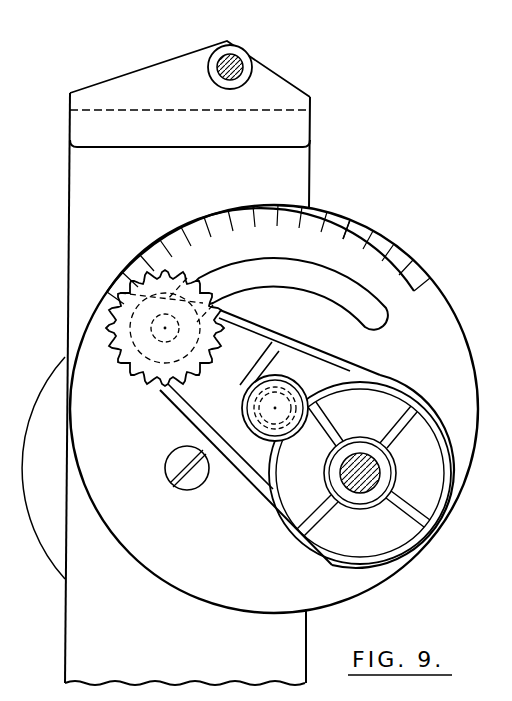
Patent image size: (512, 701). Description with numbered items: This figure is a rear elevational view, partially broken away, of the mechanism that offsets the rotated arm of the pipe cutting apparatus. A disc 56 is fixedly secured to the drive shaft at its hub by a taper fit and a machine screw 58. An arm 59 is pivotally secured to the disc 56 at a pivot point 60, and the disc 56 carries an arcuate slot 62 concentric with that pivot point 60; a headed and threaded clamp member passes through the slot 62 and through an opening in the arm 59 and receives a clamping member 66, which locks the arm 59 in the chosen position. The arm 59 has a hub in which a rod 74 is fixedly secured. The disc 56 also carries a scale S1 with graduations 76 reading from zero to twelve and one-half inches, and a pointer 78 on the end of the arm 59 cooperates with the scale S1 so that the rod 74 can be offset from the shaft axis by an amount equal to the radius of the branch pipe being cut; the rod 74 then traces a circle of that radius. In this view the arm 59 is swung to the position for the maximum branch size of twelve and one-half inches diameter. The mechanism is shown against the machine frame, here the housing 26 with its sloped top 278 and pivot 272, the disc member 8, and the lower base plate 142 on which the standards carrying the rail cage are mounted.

The housing body 26 is at (72, 200).
The cage base plate 142 is at (153, 670).
The sloped top of housing 278 is at (147, 68).
The pivot pin 272 is at (242, 53).
The disc member 8 is at (38, 452).
The disc 56 is at (438, 312).
The arcuate slot 62 is at (340, 277).
The arm 59 is at (367, 374).
The rod 74 is at (372, 470).
The pivot point 60 is at (279, 402).
The machine screw 58 is at (190, 489).
The clamping member 66 is at (160, 392).
The pointer 78 is at (125, 311).
The graduations 76 is at (277, 254).
The scale S1 is at (336, 216).